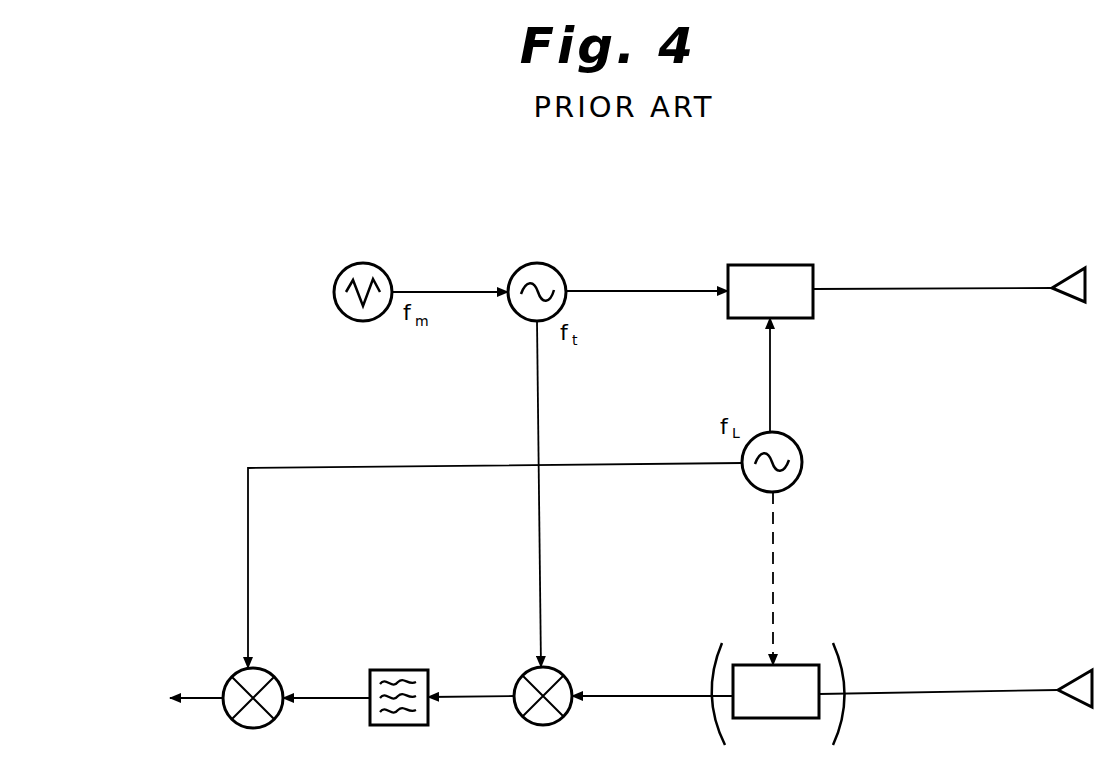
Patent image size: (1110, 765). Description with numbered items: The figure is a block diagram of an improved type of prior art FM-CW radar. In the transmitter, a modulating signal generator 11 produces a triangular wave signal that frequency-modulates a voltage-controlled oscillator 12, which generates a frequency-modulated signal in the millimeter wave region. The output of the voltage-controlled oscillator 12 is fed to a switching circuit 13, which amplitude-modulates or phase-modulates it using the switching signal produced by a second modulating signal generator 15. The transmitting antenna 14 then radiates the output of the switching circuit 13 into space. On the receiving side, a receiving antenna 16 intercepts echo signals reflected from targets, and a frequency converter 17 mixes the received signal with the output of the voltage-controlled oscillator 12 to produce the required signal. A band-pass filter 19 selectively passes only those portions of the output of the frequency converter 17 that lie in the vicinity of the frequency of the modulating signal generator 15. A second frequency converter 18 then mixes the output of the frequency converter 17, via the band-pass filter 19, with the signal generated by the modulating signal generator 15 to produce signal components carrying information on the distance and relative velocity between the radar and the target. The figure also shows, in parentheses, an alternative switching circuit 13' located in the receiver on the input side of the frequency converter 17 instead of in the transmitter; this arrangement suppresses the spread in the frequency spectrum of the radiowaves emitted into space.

The modulating signal generator 11 is at (383, 272).
The voltage-controlled oscillator 12 is at (556, 272).
The switching circuit 13 is at (770, 269).
The switching circuit 13' is at (778, 668).
The transmitting antenna 14 is at (1078, 270).
The modulating signal generator 15 is at (800, 442).
The receiving antenna 16 is at (1086, 672).
The frequency converter 17 is at (560, 674).
The frequency converter 18 is at (270, 673).
The band-pass filter 19 is at (428, 670).